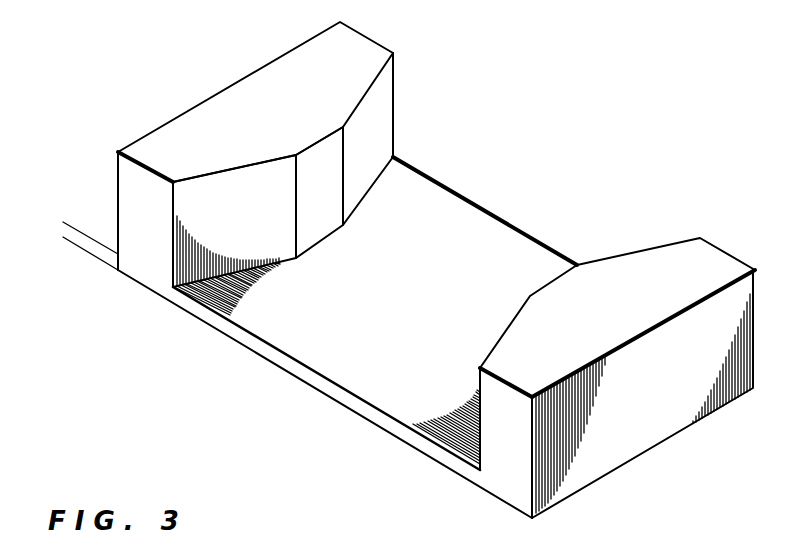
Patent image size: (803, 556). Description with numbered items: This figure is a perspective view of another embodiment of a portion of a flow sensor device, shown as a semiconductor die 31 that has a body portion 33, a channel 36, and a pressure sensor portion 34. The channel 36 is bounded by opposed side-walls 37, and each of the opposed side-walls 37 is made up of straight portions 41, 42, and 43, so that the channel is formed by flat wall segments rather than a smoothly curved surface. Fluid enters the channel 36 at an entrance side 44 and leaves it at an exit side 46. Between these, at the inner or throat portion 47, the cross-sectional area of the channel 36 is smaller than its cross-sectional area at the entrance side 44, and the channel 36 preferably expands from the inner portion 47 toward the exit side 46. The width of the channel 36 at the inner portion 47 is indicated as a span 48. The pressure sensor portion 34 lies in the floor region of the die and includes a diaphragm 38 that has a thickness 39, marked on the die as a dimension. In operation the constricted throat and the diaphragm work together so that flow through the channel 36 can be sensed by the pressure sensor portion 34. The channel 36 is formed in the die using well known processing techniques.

The semiconductor die 31 is at (703, 263).
The body portion 33 is at (650, 422).
The pressure sensor portion 34 is at (390, 433).
The channel 36 is at (548, 125).
The opposed side-walls 37 is at (330, 278).
The diaphragm 38 is at (292, 364).
The thickness 39 is at (75, 203).
The straight portion 41 is at (252, 183).
The straight portion 42 is at (322, 215).
The straight portion 43 is at (381, 121).
The entrance side 44 is at (173, 181).
The exit side 46 is at (393, 53).
The inner or throat portion 47 is at (321, 141).
The span 48 is at (548, 280).